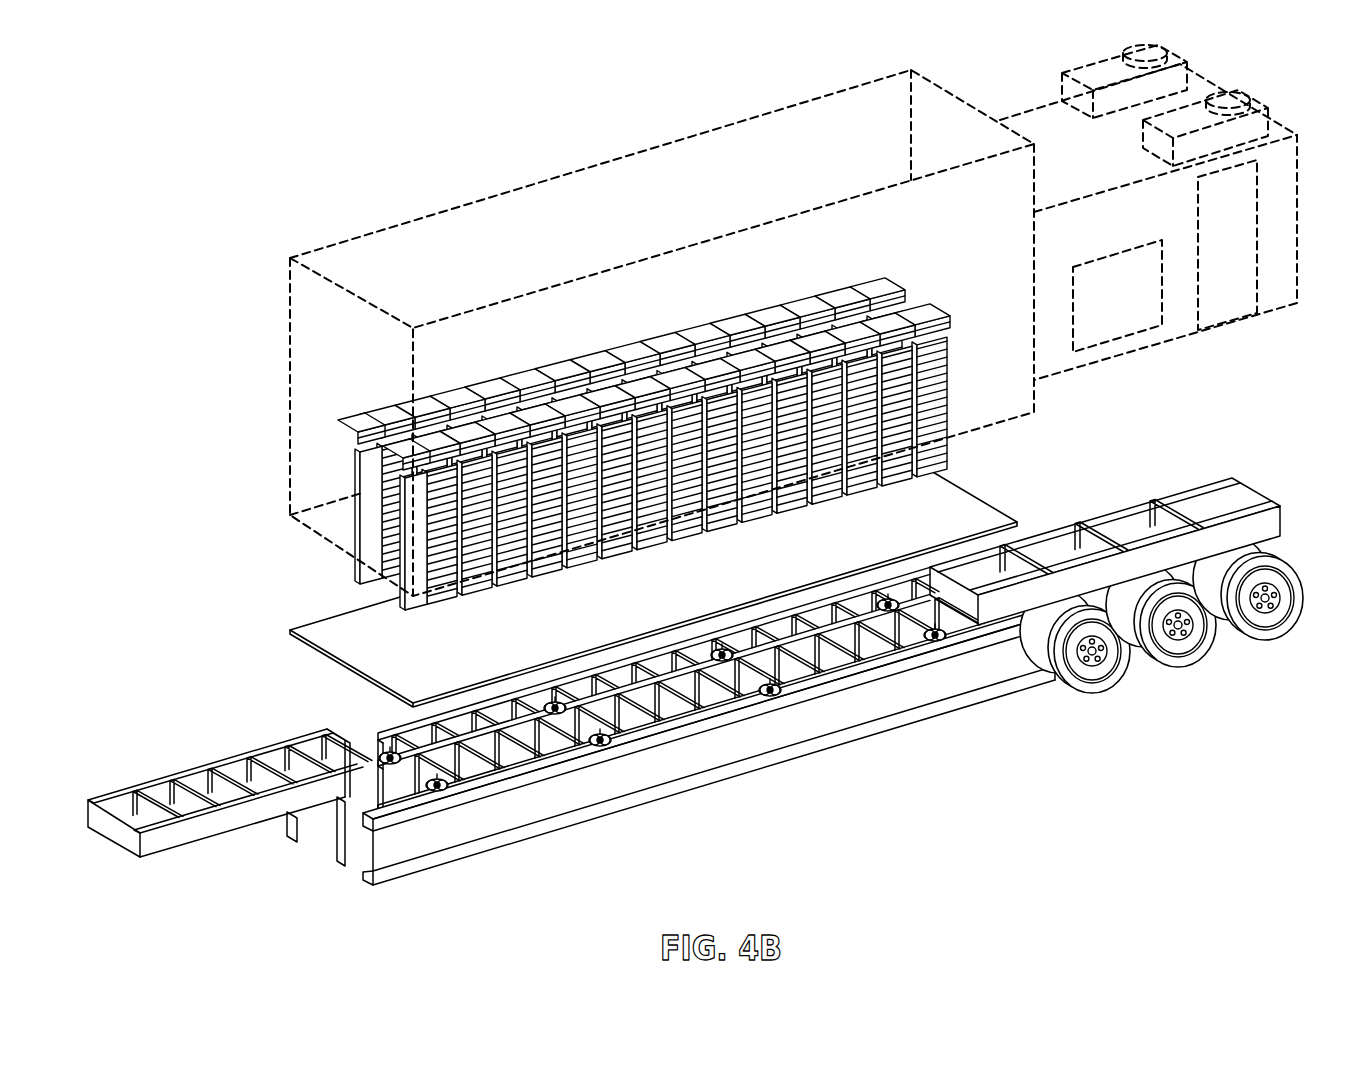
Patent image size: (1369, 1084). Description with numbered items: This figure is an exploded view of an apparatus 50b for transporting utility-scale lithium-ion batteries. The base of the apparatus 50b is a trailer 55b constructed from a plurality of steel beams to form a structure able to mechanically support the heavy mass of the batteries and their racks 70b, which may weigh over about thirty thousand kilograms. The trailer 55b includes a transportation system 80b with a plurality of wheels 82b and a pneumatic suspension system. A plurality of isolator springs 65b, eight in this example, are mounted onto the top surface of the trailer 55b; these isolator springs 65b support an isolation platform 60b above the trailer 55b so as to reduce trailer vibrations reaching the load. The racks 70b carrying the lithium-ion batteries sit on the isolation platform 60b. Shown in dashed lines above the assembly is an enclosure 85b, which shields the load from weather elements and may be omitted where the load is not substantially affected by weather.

The apparatus 50b is at (217, 442).
The trailer 55b is at (1274, 503).
The isolation platform 60b is at (300, 594).
The isolator springs 65b is at (772, 696).
The racks 70b is at (795, 262).
The transportation system 80b is at (1178, 696).
The wheels 82b is at (1280, 628).
The enclosure 85b is at (340, 140).